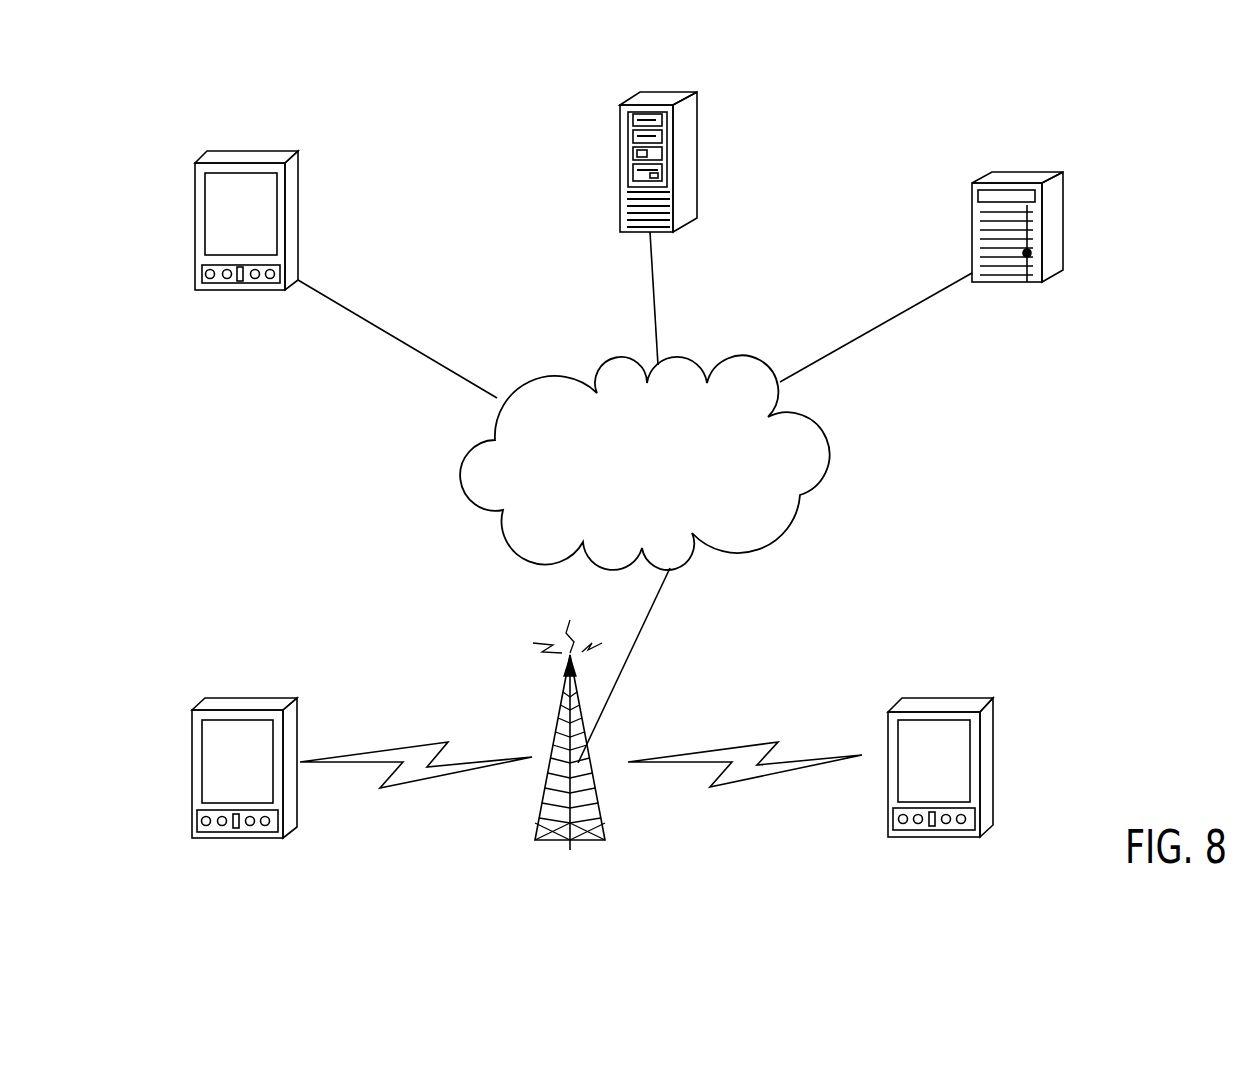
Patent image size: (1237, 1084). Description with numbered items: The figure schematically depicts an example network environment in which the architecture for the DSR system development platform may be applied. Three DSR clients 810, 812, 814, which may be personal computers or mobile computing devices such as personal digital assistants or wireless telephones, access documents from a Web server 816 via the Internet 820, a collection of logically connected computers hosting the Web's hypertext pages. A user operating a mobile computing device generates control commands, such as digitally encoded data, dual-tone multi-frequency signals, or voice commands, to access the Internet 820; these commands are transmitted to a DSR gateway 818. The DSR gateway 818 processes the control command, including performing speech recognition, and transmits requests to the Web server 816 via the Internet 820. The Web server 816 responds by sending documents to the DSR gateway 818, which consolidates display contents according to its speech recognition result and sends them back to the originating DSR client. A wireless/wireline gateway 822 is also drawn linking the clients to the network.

The DSR client 810 is at (298, 151).
The DSR client 812 is at (278, 693).
The DSR client 814 is at (975, 693).
The Web server 816 is at (1053, 172).
The DSR gateway 818 is at (695, 147).
The Internet 820 is at (660, 492).
The wireless/wireline gateway 822 is at (570, 888).